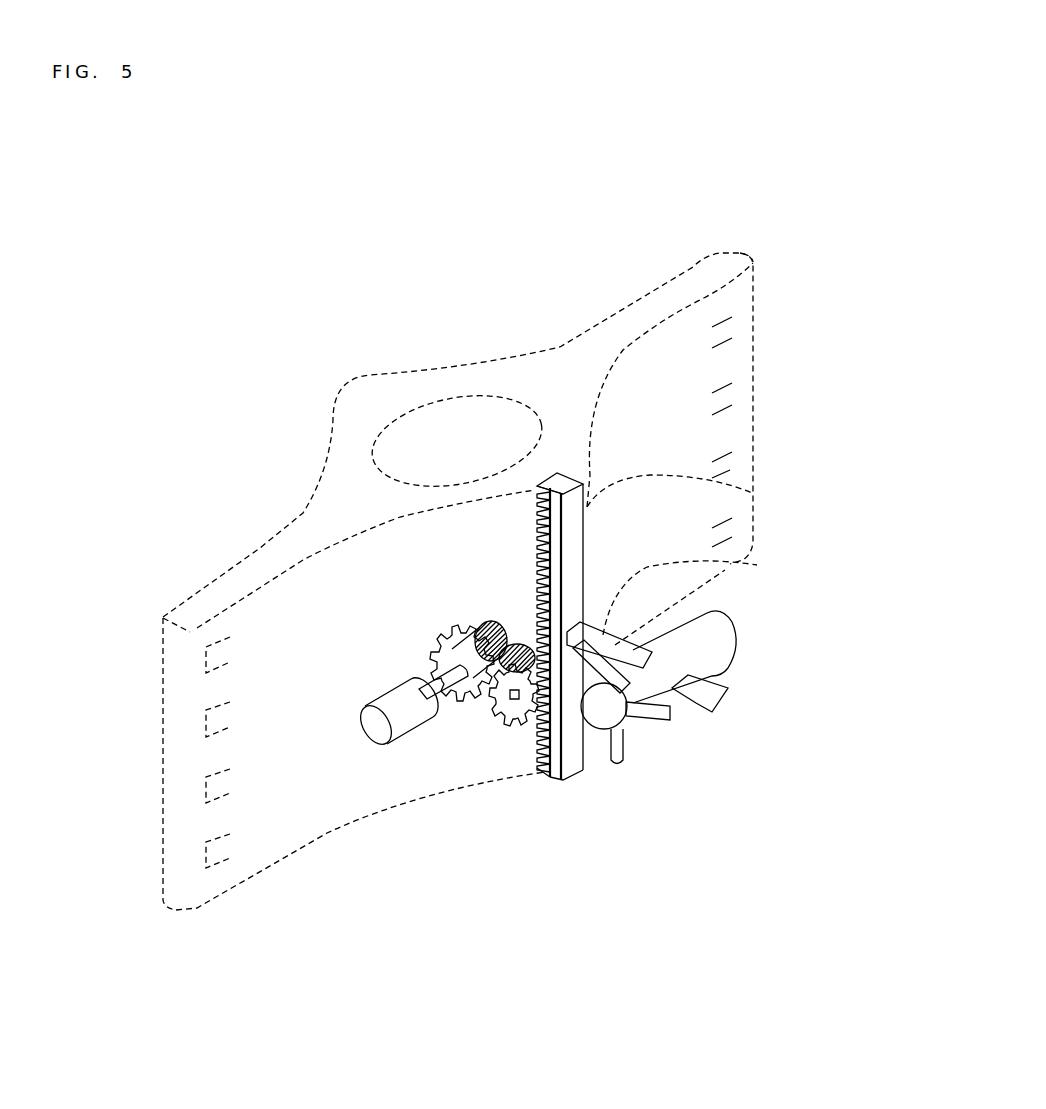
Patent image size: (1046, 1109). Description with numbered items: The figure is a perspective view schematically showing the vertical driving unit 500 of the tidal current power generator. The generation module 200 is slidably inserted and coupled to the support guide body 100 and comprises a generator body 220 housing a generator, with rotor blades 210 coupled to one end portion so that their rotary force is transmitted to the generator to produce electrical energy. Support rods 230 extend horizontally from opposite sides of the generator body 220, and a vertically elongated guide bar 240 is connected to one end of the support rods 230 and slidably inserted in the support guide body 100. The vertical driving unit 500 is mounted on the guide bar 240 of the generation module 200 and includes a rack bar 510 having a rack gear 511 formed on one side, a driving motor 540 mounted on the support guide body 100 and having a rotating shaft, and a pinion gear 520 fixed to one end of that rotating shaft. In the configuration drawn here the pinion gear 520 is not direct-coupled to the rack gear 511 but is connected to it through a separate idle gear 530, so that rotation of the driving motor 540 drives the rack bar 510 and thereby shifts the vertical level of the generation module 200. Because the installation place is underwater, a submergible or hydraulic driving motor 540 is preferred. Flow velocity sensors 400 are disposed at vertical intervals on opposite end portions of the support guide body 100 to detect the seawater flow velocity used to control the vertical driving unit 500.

The support guide body 100 is at (693, 270).
The generation module 200 is at (708, 660).
The rotor blades 210 is at (622, 767).
The generator body 220 is at (735, 630).
The support rods 230 is at (757, 565).
The guide bar 240 is at (752, 493).
The flow velocity sensors 400 is at (752, 320).
The vertical driving unit 500 is at (402, 591).
The rack bar 510 is at (460, 532).
The rack gear 511 is at (535, 538).
The pinion gear 520 is at (434, 638).
The idle gear 530 is at (512, 752).
The driving motor 540 is at (363, 750).